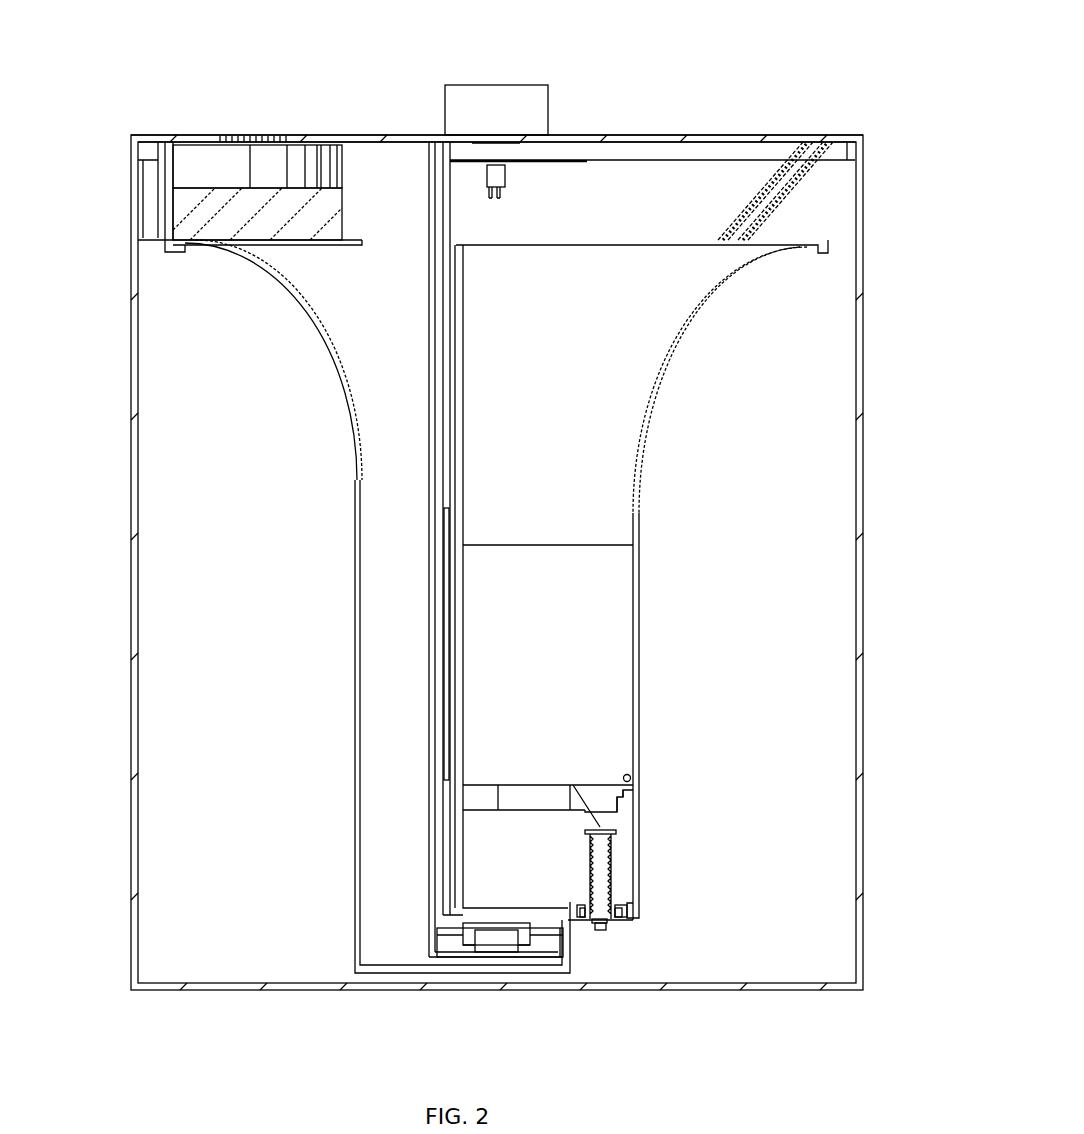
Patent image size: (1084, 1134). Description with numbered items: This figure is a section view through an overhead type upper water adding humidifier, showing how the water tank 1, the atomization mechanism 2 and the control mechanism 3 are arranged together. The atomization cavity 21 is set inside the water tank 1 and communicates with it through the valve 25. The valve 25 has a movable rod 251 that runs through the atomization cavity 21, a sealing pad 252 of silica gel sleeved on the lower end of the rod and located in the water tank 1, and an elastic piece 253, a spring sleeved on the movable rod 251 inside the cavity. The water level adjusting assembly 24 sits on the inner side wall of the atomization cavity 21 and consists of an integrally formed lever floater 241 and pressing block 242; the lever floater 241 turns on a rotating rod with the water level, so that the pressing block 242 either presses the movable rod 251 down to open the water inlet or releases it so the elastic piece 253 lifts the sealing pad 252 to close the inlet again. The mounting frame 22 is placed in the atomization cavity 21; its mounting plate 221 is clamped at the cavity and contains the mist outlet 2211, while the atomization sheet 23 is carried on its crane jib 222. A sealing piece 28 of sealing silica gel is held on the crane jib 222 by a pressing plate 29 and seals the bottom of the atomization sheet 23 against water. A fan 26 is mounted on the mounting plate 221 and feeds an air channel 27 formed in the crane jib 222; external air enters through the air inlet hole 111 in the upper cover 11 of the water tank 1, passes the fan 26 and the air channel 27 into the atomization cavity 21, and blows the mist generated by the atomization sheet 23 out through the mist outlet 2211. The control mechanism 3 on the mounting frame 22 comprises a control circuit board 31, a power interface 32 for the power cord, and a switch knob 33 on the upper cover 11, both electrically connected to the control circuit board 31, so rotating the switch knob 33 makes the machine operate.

The water tank 1 is at (864, 626).
The upper cover 11 is at (862, 150).
The air inlet hole 111 is at (253, 140).
The atomization mechanism 2 is at (659, 522).
The atomization cavity 21 is at (640, 732).
The mounting frame 22 is at (410, 497).
The mounting plate 221 is at (807, 155).
The mist outlet 2211 is at (790, 193).
The crane jib 222 is at (430, 600).
The atomization sheet 23 is at (468, 920).
The water level adjusting assembly 24 is at (761, 839).
The lever floater 241 is at (632, 800).
The pressing block 242 is at (620, 830).
The valve 25 is at (727, 949).
The movable rod 251 is at (597, 927).
The sealing pad 252 is at (583, 918).
The elastic piece 253 is at (632, 917).
The fan 26 is at (192, 190).
The air channel 27 is at (313, 340).
The sealing piece 28 is at (437, 945).
The pressing plate 29 is at (460, 955).
The control mechanism 3 is at (606, 100).
The control circuit board 31 is at (585, 160).
The power interface 32 is at (493, 175).
The switch knob 33 is at (548, 102).